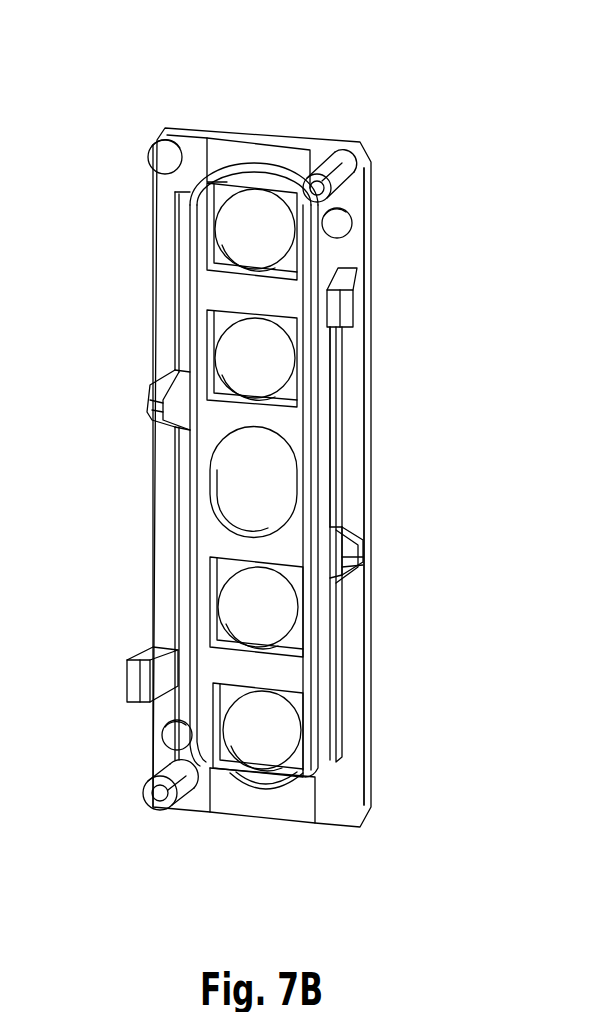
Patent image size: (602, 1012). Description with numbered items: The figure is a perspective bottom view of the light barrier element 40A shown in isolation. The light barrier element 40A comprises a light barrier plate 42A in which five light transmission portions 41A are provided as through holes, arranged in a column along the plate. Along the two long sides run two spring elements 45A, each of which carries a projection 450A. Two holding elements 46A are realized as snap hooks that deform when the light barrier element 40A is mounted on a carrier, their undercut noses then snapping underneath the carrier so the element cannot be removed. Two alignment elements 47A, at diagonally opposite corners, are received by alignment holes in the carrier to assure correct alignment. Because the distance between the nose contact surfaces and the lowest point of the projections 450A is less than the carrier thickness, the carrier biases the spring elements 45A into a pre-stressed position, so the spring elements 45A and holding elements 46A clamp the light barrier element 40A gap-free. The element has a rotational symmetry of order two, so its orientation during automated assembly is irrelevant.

The light barrier element 40A is at (376, 146).
The light transmission portions 41A is at (270, 247).
The light barrier plate 42A is at (220, 547).
The spring elements 45A is at (350, 483).
The projection 450A is at (372, 557).
The holding elements 46A is at (347, 305).
The alignment elements 47A is at (342, 184).